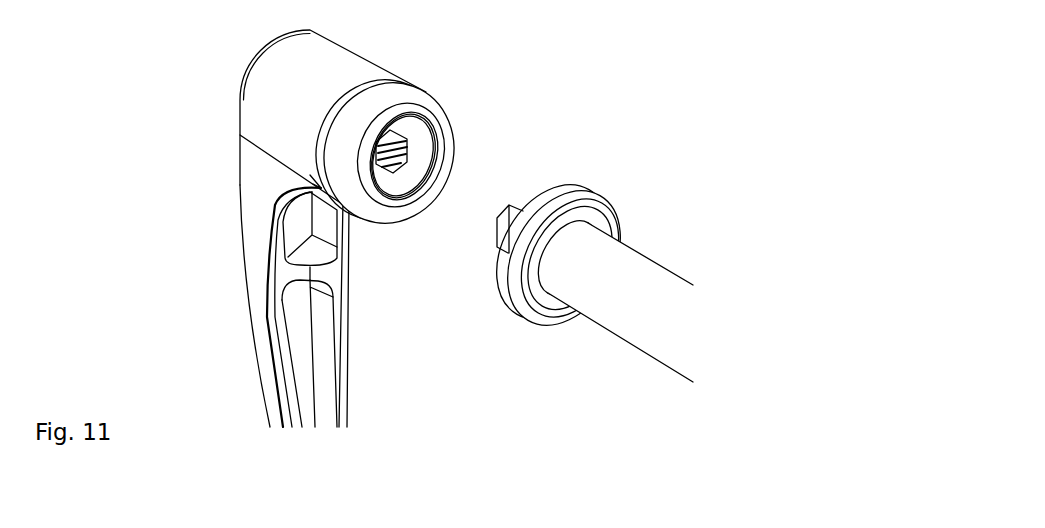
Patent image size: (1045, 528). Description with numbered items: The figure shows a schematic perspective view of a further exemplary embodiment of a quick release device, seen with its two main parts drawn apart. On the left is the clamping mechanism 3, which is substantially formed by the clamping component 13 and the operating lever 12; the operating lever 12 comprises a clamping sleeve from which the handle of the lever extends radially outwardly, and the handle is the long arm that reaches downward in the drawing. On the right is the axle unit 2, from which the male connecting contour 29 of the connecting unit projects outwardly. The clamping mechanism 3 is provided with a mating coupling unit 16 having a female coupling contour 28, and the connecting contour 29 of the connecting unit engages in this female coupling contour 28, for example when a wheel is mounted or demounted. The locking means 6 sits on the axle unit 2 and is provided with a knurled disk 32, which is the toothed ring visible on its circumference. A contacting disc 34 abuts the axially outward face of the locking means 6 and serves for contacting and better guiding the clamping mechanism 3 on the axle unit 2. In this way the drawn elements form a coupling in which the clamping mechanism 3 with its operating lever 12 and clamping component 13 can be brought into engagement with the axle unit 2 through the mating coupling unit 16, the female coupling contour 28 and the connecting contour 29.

The axle unit 2 is at (690, 237).
The clamping mechanism 3 is at (243, 71).
The locking means 6 is at (601, 205).
The operating lever 12 is at (253, 290).
The clamping component 13 is at (447, 169).
The mating coupling unit 16 is at (411, 166).
The female coupling contour 28 is at (416, 149).
The connecting contour 29 is at (510, 203).
The knurled disk 32 is at (610, 198).
The contacting disc 34 is at (420, 96).